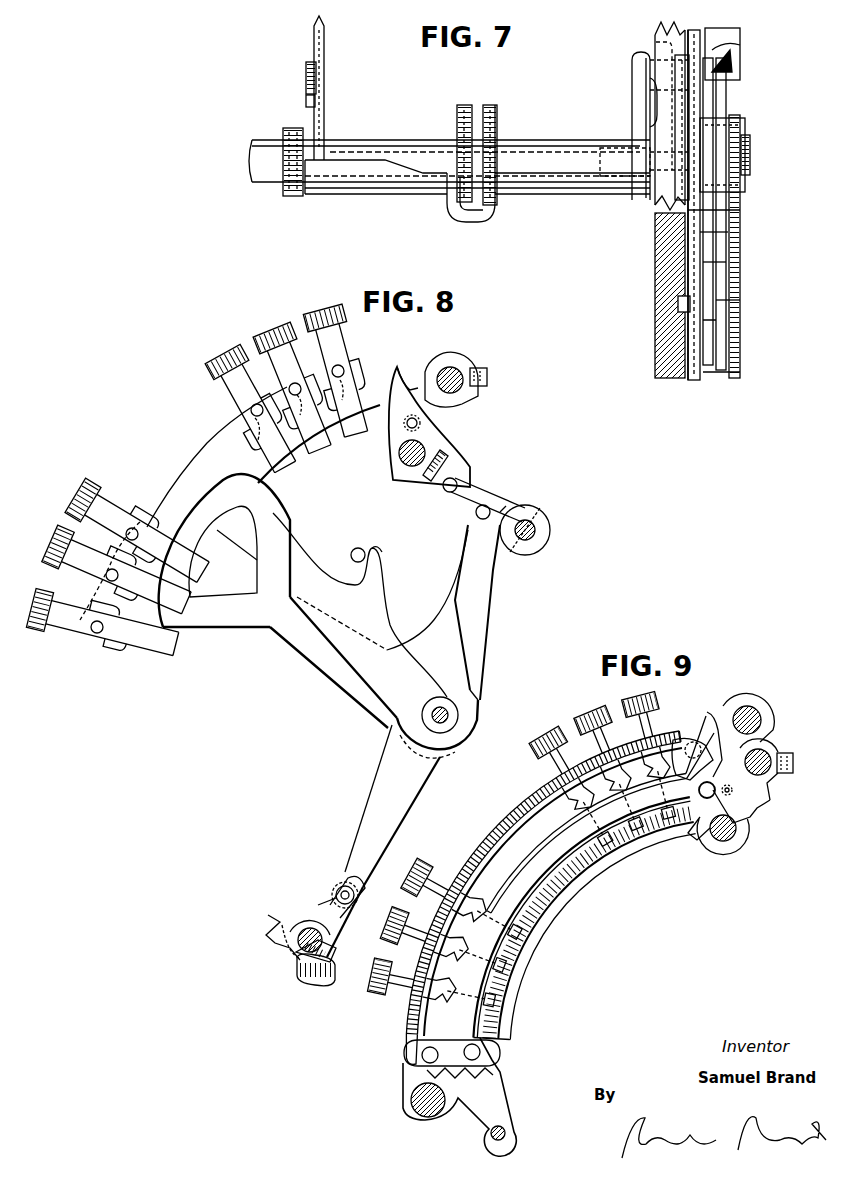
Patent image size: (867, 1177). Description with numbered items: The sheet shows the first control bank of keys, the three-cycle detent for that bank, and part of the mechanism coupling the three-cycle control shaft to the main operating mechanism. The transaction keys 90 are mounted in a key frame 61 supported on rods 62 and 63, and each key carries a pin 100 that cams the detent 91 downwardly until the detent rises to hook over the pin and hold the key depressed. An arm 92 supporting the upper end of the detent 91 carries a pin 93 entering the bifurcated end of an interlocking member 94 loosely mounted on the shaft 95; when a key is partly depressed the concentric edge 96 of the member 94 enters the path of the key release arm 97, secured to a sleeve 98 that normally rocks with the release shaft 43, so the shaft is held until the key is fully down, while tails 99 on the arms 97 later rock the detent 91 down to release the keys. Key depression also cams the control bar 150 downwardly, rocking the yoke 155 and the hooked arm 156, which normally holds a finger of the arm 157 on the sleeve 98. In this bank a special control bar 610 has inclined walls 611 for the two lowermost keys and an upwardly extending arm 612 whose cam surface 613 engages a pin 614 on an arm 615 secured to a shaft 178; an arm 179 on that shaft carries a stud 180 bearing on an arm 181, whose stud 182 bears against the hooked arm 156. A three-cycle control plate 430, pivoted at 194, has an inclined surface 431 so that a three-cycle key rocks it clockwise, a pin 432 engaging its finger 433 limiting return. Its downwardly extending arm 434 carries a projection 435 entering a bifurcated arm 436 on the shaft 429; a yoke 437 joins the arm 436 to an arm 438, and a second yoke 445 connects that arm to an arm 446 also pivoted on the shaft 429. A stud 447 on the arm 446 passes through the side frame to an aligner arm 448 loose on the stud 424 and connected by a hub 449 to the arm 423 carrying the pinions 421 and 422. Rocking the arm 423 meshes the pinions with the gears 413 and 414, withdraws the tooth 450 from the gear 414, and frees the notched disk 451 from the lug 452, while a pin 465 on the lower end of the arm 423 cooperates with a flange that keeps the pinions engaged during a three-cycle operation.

In FIG. 7, the shaft 429 is at (264, 150).
In FIG. 8, the shaft 429 is at (302, 930).
In FIG. 7, the downwardly extending arm 434 is at (322, 56).
In FIG. 8, the downwardly extending arm 434 is at (392, 760).
In FIG. 7, the projection 435 is at (305, 78).
In FIG. 8, the projection 435 is at (348, 880).
In FIG. 7, the bifurcated arm 436 is at (306, 103).
In FIG. 8, the bifurcated arm 436 is at (316, 902).
In FIG. 7, the yoke 437 is at (478, 212).
In FIG. 8, the yoke 437 is at (318, 982).
In FIG. 7, the arm 438 is at (488, 124).
In FIG. 8, the arm 438 is at (268, 938).
In FIG. 7, the second yoke 445 is at (585, 190).
In FIG. 8, the second yoke 445 is at (298, 962).
In FIG. 7, the arm 446 is at (633, 94).
In FIG. 7, the stud 447 is at (656, 44).
In FIG. 7, the aligner arm 448 is at (702, 124).
In FIG. 7, the hub 449 is at (718, 150).
In FIG. 7, the stud 424 is at (750, 160).
In FIG. 7, the gear 413 is at (700, 214).
In FIG. 7, the second gear 414 is at (722, 226).
In FIG. 7, the supporting arm 423 is at (738, 262).
In FIG. 7, the pinion 421 is at (722, 290).
In FIG. 7, the pinion 422 is at (702, 320).
In FIG. 7, the tooth 450 is at (728, 70).
In FIG. 7, the lug 452 is at (680, 303).
In FIG. 7, the disk 451 is at (682, 327).
In FIG. 7, the pin 465 is at (728, 372).
In FIG. 8, the transaction keys 90 is at (292, 328).
In FIG. 9, the transaction keys 90 is at (556, 766).
In FIG. 8, the pin 100 is at (343, 365).
In FIG. 9, the pin 100 is at (580, 790).
In FIG. 8, the inclined surface 431 is at (265, 428).
In FIG. 8, the hooked arm 156 is at (388, 392).
In FIG. 8, the release shaft 43 is at (455, 366).
In FIG. 9, the release shaft 43 is at (770, 752).
In FIG. 8, the sleeve 98 is at (466, 370).
In FIG. 9, the sleeve 98 is at (795, 760).
In FIG. 8, the arm 157 is at (458, 410).
In FIG. 8, the stud 182 is at (420, 426).
In FIG. 8, the arm 181 is at (460, 458).
In FIG. 8, the shaft 95 is at (398, 456).
In FIG. 9, the shaft 95 is at (735, 838).
In FIG. 8, the yoke 155 is at (424, 480).
In FIG. 8, the arm 179 is at (480, 498).
In FIG. 8, the stud 180 is at (448, 492).
In FIG. 8, the cam surface 613 is at (510, 508).
In FIG. 8, the pin 614 is at (476, 514).
In FIG. 8, the shaft 178 is at (536, 530).
In FIG. 8, the arm 615 is at (548, 542).
In FIG. 8, the three-cycle control plate 430 is at (295, 548).
In FIG. 8, the pin 432 is at (352, 556).
In FIG. 8, the finger 433 is at (384, 556).
In FIG. 8, the upwardly extending arm 612 is at (480, 603).
In FIG. 8, the inclined walls 611 is at (185, 586).
In FIG. 8, the special control bar 610 is at (322, 652).
In FIG. 8, the pivot 194 is at (438, 708).
In FIG. 9, the tails 99 is at (707, 713).
In FIG. 9, the rod 63 is at (765, 710).
In FIG. 9, the key release arm 97 is at (772, 790).
In FIG. 9, the concentric edge 96 is at (762, 810).
In FIG. 9, the pin 93 is at (712, 797).
In FIG. 9, the arm 92 is at (704, 842).
In FIG. 9, the interlocking member 94 is at (722, 854).
In FIG. 9, the control bar 150 is at (533, 853).
In FIG. 9, the key frame 61 is at (563, 897).
In FIG. 9, the detent 91 is at (512, 940).
In FIG. 9, the rod 62 is at (420, 1112).